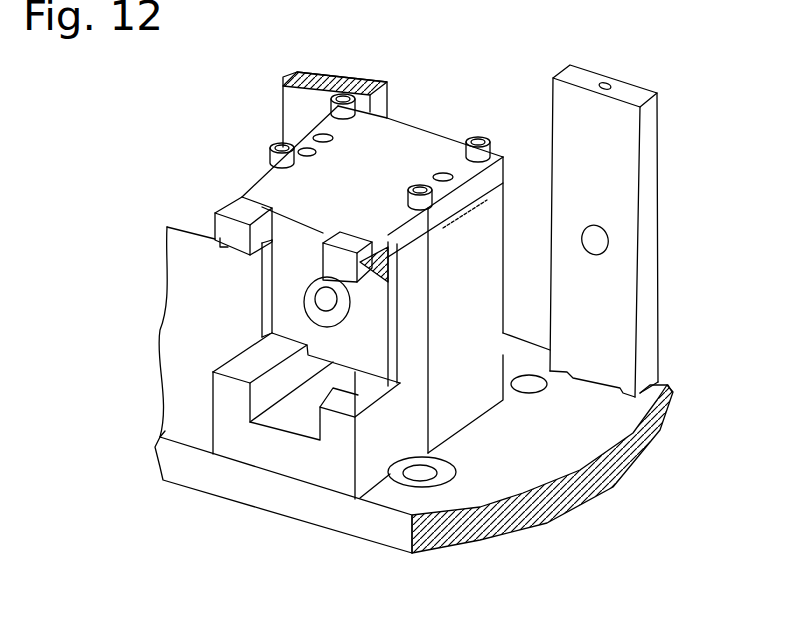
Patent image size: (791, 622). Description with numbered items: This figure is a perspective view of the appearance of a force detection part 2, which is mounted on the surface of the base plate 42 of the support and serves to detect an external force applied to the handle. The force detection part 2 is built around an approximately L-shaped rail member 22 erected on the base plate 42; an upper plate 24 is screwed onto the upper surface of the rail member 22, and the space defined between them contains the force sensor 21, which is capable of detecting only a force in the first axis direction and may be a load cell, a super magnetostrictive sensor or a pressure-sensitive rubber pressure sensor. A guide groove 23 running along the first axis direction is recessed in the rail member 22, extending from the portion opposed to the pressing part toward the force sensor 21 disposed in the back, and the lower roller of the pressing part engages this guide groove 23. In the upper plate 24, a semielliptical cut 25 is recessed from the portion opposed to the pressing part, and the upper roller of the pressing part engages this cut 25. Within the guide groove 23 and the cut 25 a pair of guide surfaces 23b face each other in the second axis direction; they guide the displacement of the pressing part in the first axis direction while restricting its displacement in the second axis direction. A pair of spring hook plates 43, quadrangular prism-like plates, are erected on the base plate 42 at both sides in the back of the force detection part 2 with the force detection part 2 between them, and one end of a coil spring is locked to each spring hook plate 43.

The force detection part 2 is at (471, 105).
The force sensor 21 is at (290, 272).
The rail member 22 is at (327, 458).
The guide groove 23 is at (297, 412).
The guide surfaces 23b is at (283, 222).
The upper plate 24 is at (403, 150).
The semielliptical cut 25 is at (316, 262).
The base plate 42 is at (560, 440).
The spring hook plates 43 is at (303, 100).